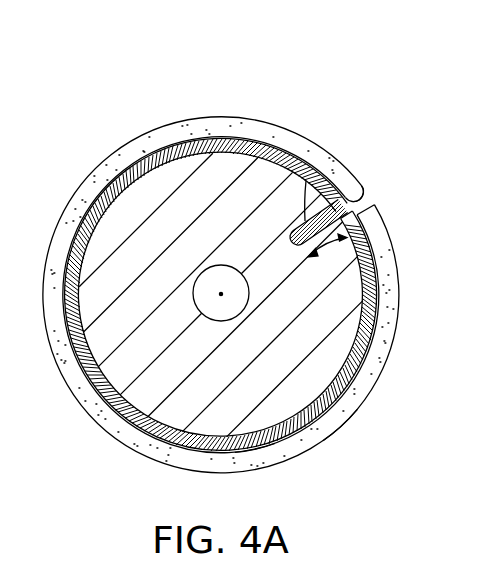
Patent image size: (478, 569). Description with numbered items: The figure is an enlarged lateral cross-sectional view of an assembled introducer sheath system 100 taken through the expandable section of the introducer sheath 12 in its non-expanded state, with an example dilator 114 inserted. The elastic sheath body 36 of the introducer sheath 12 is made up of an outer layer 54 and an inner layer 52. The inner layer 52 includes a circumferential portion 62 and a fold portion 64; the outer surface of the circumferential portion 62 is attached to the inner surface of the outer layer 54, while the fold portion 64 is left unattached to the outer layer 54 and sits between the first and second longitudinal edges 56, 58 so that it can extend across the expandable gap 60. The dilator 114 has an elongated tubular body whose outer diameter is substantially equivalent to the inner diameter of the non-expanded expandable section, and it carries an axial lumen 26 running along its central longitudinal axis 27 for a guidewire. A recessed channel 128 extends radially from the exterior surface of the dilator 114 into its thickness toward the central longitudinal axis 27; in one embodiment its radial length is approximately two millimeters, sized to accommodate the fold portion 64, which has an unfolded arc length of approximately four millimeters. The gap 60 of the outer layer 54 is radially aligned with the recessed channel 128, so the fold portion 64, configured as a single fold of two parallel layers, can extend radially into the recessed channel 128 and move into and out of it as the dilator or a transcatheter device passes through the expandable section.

The assembled introducer sheath system 100 is at (151, 48).
The introducer sheath 12 is at (109, 444).
The elastic sheath body 36 is at (210, 128).
The circumferential portion 62 is at (275, 143).
The dilator 114 is at (165, 228).
The recessed channel 128 is at (329, 193).
The fold portion 64 is at (359, 184).
The first longitudinal edge 56 is at (365, 195).
The expandable gap 60 is at (368, 199).
The second longitudinal edge 58 is at (376, 206).
The axial lumen 26 is at (222, 294).
The central longitudinal axis 27 is at (237, 281).
The outer layer 54 is at (322, 425).
The inner layer 52 is at (268, 452).